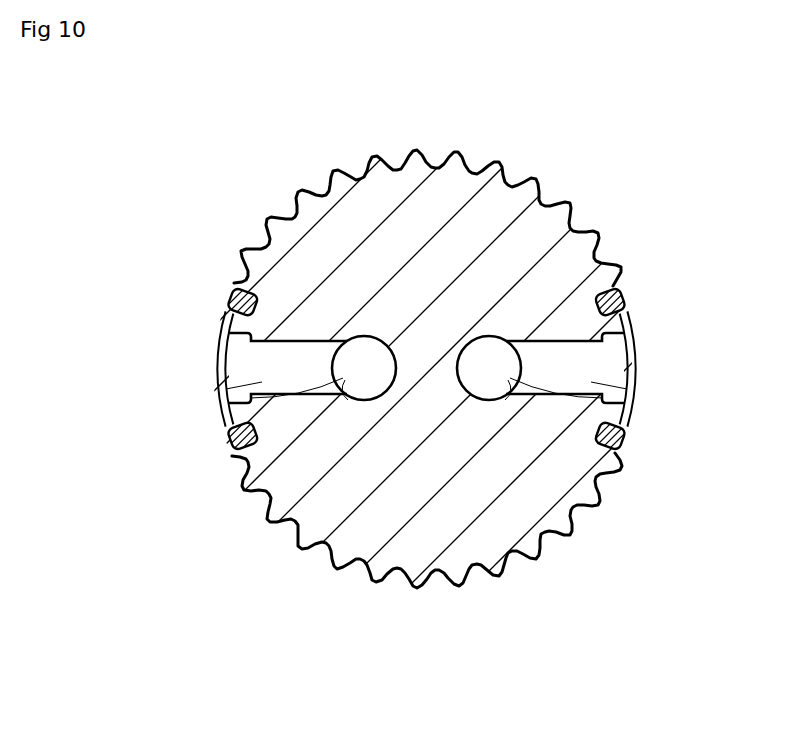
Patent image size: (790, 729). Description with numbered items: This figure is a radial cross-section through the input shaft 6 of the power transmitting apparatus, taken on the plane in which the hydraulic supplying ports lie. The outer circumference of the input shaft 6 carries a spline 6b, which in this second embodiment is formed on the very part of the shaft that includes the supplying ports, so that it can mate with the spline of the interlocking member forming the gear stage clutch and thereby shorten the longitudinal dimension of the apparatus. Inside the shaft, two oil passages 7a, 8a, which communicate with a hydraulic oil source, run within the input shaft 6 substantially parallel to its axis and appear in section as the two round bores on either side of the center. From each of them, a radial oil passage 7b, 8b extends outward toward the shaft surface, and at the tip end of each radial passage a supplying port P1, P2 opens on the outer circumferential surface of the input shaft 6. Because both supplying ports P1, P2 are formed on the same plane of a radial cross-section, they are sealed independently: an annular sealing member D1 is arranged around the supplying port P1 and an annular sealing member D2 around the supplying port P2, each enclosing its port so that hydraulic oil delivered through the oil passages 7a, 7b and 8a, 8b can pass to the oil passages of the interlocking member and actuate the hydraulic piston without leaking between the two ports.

The input shaft 6 is at (463, 196).
The spline 6b is at (378, 152).
The oil passage 7a is at (255, 416).
The oil passage 7b is at (226, 389).
The oil passage 8a is at (598, 416).
The oil passage 8b is at (627, 389).
The supplying port P1 is at (236, 350).
The supplying port P2 is at (618, 345).
The annular sealing member D1 is at (228, 303).
The annular sealing member D2 is at (626, 303).